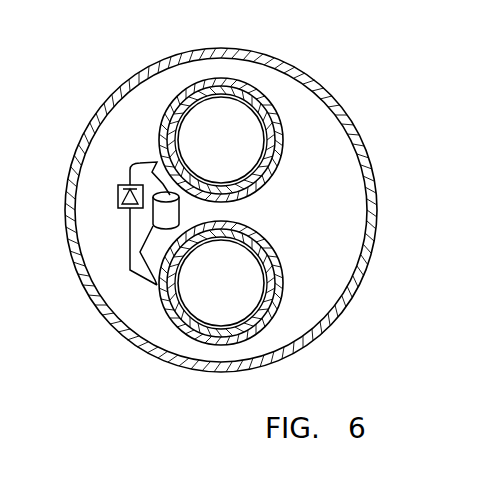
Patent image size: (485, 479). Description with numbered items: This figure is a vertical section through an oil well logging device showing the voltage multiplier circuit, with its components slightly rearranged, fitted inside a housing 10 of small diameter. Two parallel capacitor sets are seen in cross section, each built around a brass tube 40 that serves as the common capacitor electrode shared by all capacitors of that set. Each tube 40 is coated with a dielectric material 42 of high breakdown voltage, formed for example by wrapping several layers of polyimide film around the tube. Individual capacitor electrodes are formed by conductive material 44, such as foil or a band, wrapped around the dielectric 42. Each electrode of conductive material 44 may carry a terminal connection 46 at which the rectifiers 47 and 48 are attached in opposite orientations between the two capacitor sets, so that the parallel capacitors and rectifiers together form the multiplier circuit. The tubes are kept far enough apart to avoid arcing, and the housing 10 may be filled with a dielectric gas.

The housing 10 is at (362, 147).
The brass tube 40 is at (250, 98).
The dielectric material 42 is at (272, 100).
The conductive material 44 is at (283, 118).
The terminal connection 46 is at (157, 162).
The rectifier 47 is at (155, 226).
The rectifier 48 is at (118, 198).